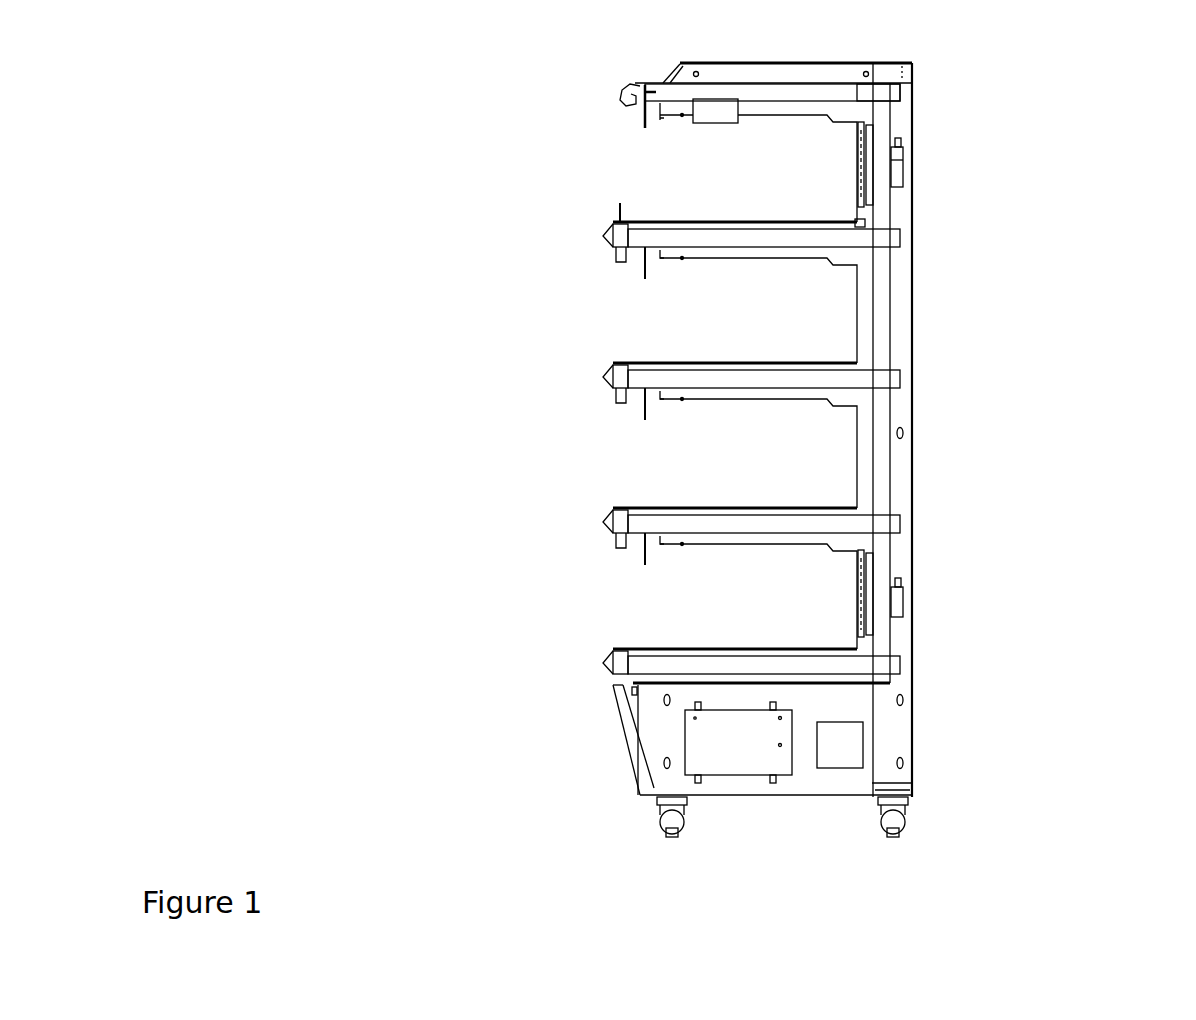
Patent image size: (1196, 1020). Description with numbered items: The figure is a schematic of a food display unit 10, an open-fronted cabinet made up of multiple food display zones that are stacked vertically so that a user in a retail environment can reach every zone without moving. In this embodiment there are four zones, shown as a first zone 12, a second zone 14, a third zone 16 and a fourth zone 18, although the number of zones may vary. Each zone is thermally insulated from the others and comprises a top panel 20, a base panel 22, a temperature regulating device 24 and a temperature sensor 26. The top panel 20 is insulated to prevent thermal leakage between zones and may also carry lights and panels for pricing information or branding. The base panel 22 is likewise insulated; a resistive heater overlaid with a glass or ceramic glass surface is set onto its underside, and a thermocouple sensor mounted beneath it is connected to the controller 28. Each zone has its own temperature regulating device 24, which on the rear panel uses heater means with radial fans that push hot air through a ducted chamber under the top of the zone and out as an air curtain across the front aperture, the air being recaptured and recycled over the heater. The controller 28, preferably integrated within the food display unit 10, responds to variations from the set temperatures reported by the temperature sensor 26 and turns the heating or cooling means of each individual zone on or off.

The food display unit 10 is at (904, 425).
The first zone 12 is at (704, 156).
The second zone 14 is at (704, 315).
The third zone 16 is at (704, 463).
The fourth zone 18 is at (704, 598).
The top panel 20 is at (887, 100).
The base panel 22 is at (872, 225).
The temperature regulating device 24 is at (887, 156).
The temperature sensor 26 is at (716, 98).
The controller 28 is at (877, 745).